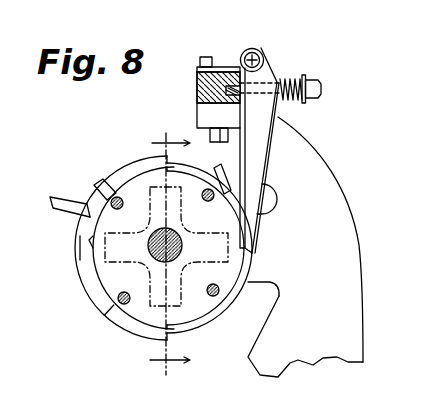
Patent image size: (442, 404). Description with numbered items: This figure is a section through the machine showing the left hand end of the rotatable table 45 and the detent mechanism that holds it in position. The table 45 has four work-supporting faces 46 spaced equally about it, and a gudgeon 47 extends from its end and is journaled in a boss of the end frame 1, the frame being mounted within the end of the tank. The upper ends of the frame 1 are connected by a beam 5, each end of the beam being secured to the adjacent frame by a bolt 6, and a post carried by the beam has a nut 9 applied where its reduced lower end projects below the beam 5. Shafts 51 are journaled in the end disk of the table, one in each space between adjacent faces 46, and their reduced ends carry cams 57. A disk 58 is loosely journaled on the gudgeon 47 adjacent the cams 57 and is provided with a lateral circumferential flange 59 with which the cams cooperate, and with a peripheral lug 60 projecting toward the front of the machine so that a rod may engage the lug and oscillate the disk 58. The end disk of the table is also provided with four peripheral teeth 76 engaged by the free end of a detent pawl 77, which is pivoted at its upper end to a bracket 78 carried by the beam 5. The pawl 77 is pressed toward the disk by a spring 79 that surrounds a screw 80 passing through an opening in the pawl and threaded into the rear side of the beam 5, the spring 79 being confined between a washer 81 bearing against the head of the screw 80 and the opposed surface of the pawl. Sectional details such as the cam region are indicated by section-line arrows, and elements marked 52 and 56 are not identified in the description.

The frame 1 is at (330, 192).
The beam 5 is at (197, 77).
The bolt 6 is at (233, 136).
The nut 9 is at (170, 254).
The rotatable table 45 is at (200, 308).
The work-supporting faces 46 is at (110, 250).
The gudgeon 47 is at (173, 231).
The shaft 51 is at (121, 196).
The pawl 52 is at (223, 174).
The arm pivot 56 is at (93, 219).
The cam 57 is at (95, 184).
The disk 58 is at (146, 161).
The lateral circumferential flange 59 is at (257, 252).
The peripheral lug 60 is at (57, 208).
The peripheral teeth 76 is at (88, 247).
The detent pawl 77 is at (256, 140).
The bracket 78 is at (241, 58).
The spring 79 is at (281, 78).
The screw 80 is at (304, 100).
The washer 81 is at (313, 74).